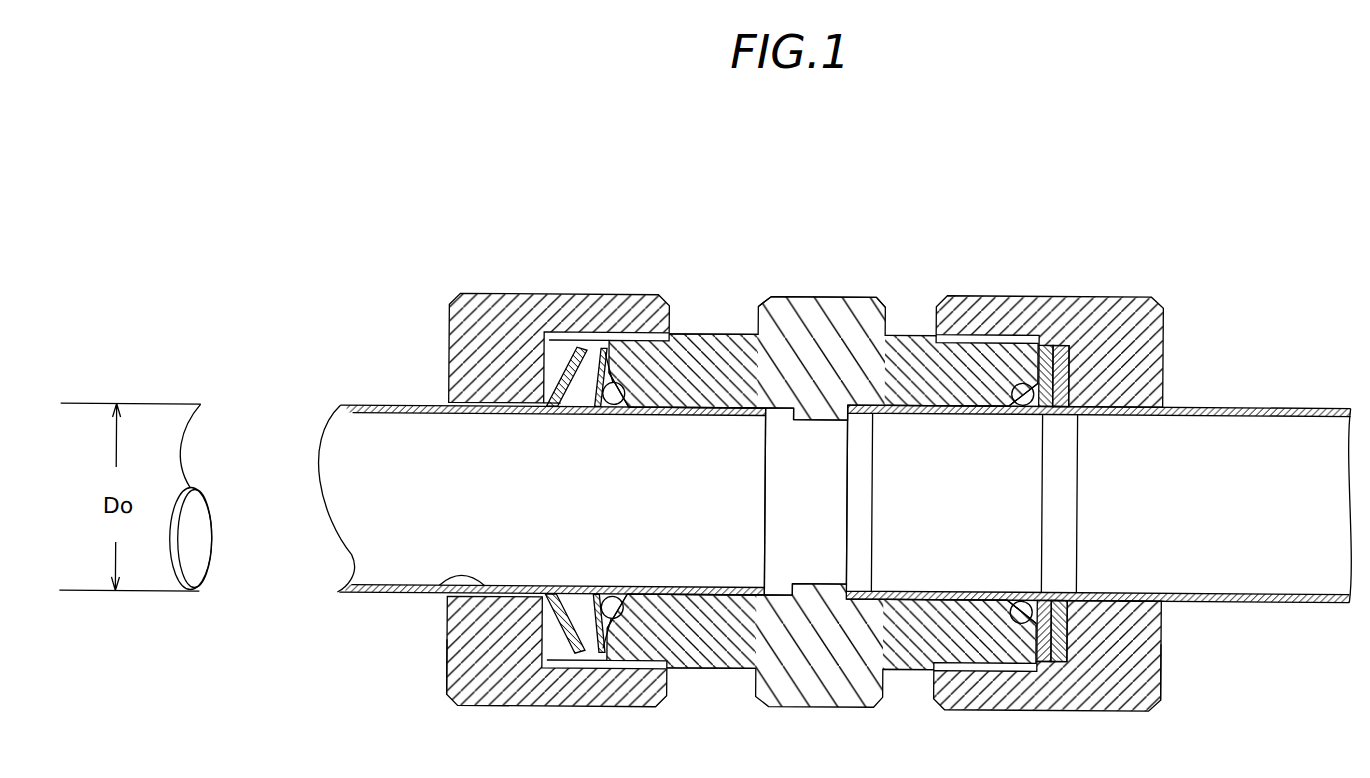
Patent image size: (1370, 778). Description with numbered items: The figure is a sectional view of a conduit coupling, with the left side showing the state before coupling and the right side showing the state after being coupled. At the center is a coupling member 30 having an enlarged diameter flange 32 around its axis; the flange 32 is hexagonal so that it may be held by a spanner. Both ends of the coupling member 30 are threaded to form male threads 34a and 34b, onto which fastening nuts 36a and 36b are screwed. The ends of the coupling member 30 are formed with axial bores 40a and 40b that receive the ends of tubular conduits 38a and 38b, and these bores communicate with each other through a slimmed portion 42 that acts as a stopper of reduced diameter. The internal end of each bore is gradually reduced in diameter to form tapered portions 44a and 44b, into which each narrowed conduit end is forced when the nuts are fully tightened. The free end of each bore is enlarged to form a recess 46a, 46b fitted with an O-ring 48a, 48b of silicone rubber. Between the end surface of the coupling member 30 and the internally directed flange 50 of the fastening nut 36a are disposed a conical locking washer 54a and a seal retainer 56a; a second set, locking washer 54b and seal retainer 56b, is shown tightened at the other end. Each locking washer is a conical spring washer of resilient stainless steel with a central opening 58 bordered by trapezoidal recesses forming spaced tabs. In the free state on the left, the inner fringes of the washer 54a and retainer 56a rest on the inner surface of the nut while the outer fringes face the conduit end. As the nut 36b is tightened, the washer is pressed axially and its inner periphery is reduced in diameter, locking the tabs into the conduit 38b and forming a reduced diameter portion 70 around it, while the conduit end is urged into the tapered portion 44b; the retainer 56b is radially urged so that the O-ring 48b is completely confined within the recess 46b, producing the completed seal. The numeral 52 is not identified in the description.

The coupling member 30 is at (891, 285).
The enlarged diameter flange 32 is at (800, 295).
The male thread 34a is at (712, 333).
The male thread 34b is at (926, 333).
The fastening nut 36a is at (488, 294).
The fastening nut 36b is at (1100, 293).
The tubular conduit 38a is at (293, 406).
The tubular conduit 38b is at (1262, 403).
The axial bore 40a is at (700, 410).
The axial bore 40b is at (957, 406).
The slimmed portion 42 is at (792, 470).
The tapered portion 44a is at (780, 592).
The tapered portion 44b is at (875, 416).
The recess 46a is at (625, 592).
The recess 46b is at (1000, 594).
The O-ring 48a is at (614, 406).
The O-ring 48b is at (1028, 406).
The internally directed flange 50 is at (458, 668).
The pipe bead 52 is at (440, 590).
The locking washer 54a is at (566, 360).
The locking washer 54b is at (1070, 652).
The seal retainer 56a is at (592, 345).
The seal retainer 56b is at (1044, 660).
The central opening 58 is at (548, 408).
The reduced diameter portion 70 is at (1087, 558).